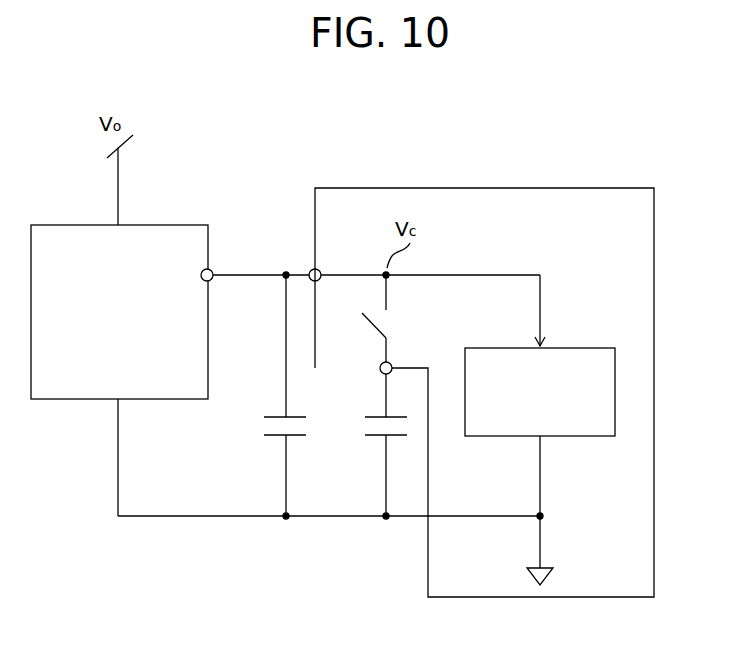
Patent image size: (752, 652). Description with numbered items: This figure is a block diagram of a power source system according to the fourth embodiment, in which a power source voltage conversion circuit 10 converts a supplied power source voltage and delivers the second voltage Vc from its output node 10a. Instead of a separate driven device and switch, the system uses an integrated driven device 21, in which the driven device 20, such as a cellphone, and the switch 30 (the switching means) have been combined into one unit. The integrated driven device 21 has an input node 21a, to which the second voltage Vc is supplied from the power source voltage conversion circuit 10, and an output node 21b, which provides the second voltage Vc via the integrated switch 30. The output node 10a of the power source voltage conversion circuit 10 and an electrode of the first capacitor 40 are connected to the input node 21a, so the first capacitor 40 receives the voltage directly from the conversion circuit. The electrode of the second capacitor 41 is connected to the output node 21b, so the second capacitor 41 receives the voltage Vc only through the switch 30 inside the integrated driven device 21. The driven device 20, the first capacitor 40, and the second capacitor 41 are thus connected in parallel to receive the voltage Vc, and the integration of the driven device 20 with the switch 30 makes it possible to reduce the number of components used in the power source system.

The power source voltage conversion circuit 10 is at (164, 223).
The output node 10a is at (212, 270).
The driven device 20 is at (582, 346).
The driven device 21 is at (549, 185).
The input node 21a is at (311, 268).
The output node 21b is at (382, 372).
The switch 30 is at (388, 324).
The first capacitor 40 is at (362, 440).
The second capacitor 41 is at (267, 438).